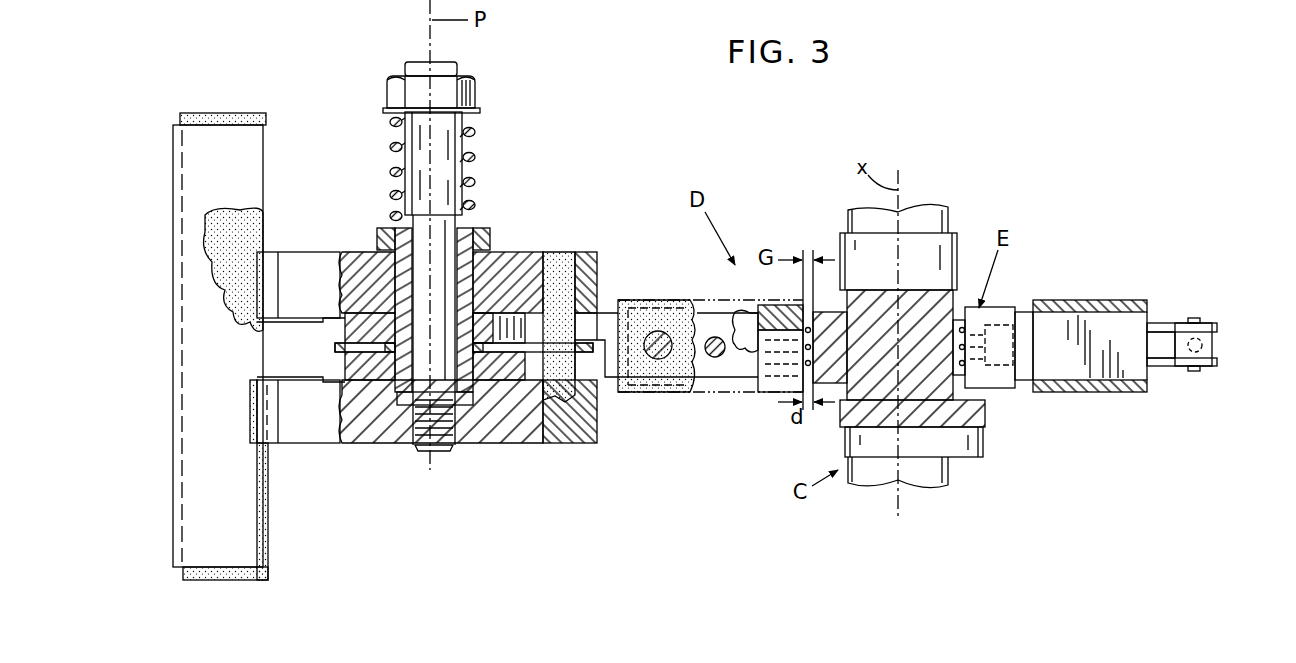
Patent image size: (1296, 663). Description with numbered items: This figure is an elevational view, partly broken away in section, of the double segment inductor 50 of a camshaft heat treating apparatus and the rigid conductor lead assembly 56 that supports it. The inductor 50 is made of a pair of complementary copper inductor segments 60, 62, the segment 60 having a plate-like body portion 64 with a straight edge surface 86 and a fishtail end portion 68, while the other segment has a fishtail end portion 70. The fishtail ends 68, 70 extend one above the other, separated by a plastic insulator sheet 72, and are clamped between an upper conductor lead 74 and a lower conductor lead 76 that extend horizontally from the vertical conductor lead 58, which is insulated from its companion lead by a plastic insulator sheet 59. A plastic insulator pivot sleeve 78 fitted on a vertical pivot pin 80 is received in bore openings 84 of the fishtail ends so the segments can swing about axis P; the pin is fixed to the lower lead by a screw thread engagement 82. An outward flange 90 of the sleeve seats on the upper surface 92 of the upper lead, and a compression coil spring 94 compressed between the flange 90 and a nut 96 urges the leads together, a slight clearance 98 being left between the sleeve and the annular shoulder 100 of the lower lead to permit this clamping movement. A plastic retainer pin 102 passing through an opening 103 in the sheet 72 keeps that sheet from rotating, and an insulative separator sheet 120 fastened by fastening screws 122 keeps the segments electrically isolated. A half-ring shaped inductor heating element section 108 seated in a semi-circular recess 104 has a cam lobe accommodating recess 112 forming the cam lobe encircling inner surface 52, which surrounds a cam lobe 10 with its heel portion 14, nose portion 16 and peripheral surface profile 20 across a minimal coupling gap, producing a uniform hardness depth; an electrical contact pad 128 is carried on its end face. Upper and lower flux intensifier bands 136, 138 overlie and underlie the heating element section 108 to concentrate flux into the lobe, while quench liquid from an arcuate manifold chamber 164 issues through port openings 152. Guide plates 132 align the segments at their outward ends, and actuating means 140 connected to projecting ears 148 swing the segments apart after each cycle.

The cam lobes 10 is at (840, 318).
The heel portion 14 is at (965, 365).
The nose portion 16 is at (775, 388).
The outer peripheral surface profile 20 is at (812, 372).
The double segment inductor 50 is at (740, 384).
The cam lobe encircling inner surface 52 is at (830, 340).
The rigid conductor lead assembly 56 is at (292, 200).
The vertical conductor lead 58 is at (215, 135).
The plastic insulator sheet 59 is at (268, 535).
The inductor segment 60 is at (1090, 325).
The inductor segment 62 is at (510, 392).
The body portion 64 is at (1128, 385).
The fishtail end portion 68 is at (340, 316).
The fishtail end portion 70 is at (340, 370).
The plastic insulator sheet 72 is at (335, 347).
The upper conductor lead 74 is at (352, 260).
The lower conductor lead 76 is at (527, 423).
The plastic insulator pivot sleeve 78 is at (465, 275).
The vertical pivot pin 80 is at (438, 222).
The screw thread engagement 82 is at (440, 400).
The bore openings 84 is at (392, 330).
The straight edge surface 86 is at (1068, 320).
The outward flange 90 is at (380, 232).
The upper surface 92 is at (555, 258).
The compression coil spring 94 is at (472, 157).
The nut 96 is at (393, 90).
The clearance 98 is at (470, 395).
The annular shoulder 100 is at (398, 385).
The plastic retainer pin 102 is at (583, 258).
The opening 103 is at (596, 320).
The semi-circular recess 104 is at (748, 313).
The half-ring shaped inductor heating element section 108 is at (792, 325).
The half oval-shaped cam lobe accommodating recess 112 is at (958, 320).
The insulative separator sheet 120 is at (657, 400).
The fastening screws 122 is at (706, 337).
The electrical contact pad 128 is at (1008, 318).
The guide plates 132 is at (1130, 305).
The upper flux intensifier band 136 is at (1018, 310).
The lower flux intensifier band 138 is at (1000, 386).
The actuating means 140 is at (1222, 345).
The projecting ears 148 is at (1170, 328).
The port openings 152 is at (818, 370).
The arcuate manifold chamber 164 is at (1000, 347).